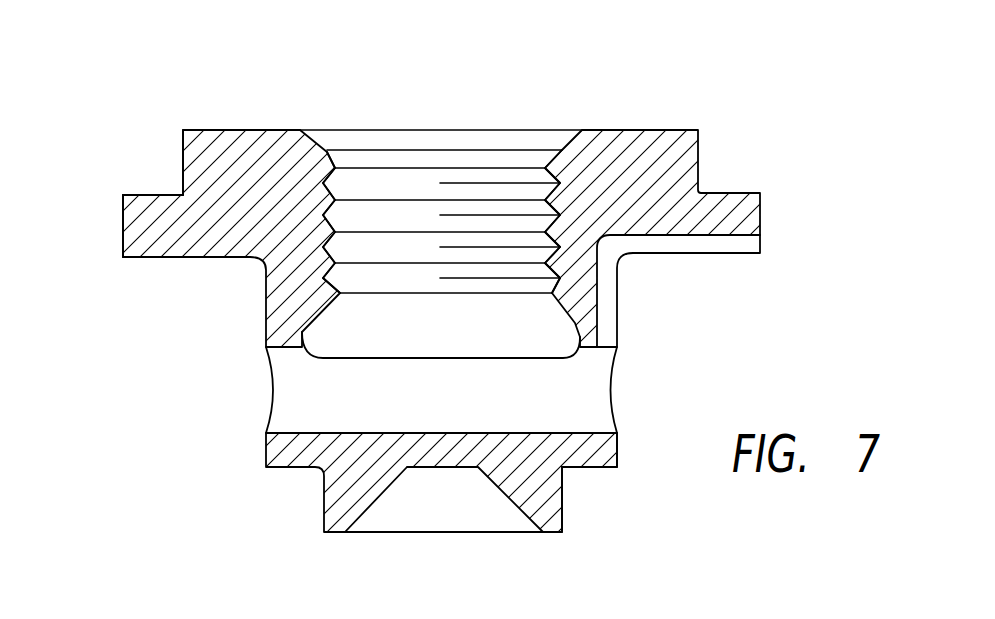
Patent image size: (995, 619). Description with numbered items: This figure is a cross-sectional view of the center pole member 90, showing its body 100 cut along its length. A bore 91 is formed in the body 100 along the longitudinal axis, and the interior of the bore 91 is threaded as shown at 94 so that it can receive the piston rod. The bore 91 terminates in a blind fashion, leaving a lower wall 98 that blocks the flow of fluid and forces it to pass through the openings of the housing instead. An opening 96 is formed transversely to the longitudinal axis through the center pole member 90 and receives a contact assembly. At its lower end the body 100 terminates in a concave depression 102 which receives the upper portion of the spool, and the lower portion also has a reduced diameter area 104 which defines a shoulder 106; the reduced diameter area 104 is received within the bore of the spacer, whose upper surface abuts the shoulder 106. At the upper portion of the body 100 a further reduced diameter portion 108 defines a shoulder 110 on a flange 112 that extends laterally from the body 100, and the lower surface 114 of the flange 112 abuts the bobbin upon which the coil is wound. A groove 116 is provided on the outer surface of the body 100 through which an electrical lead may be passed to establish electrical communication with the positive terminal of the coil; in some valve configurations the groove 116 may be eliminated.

The center pole member 90 is at (497, 309).
The bore 91 is at (385, 183).
The threaded interior 94 is at (543, 188).
The opening 96 is at (595, 395).
The lower wall 98 is at (427, 457).
The body 100 is at (680, 160).
The concave depression 102 is at (508, 515).
The reduced diameter area 104 is at (563, 500).
The shoulder 106 is at (600, 468).
The reduced diameter portion 108 is at (183, 150).
The shoulder 110 is at (147, 195).
The flange 112 is at (128, 234).
The lower surface 114 is at (212, 257).
The groove 116 is at (695, 245).